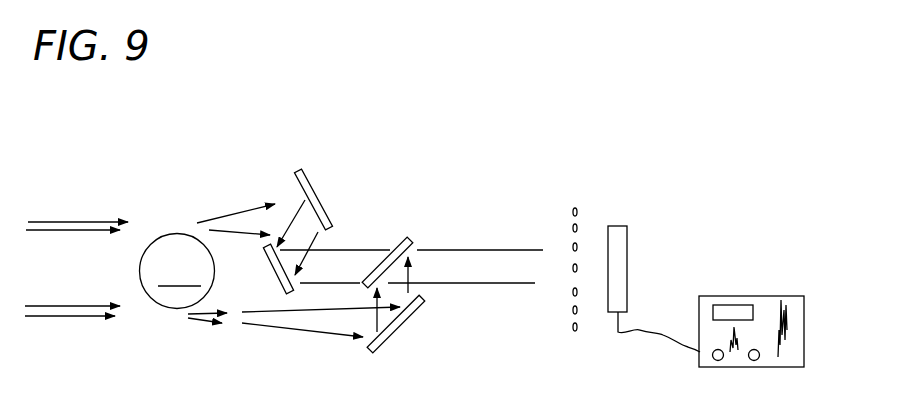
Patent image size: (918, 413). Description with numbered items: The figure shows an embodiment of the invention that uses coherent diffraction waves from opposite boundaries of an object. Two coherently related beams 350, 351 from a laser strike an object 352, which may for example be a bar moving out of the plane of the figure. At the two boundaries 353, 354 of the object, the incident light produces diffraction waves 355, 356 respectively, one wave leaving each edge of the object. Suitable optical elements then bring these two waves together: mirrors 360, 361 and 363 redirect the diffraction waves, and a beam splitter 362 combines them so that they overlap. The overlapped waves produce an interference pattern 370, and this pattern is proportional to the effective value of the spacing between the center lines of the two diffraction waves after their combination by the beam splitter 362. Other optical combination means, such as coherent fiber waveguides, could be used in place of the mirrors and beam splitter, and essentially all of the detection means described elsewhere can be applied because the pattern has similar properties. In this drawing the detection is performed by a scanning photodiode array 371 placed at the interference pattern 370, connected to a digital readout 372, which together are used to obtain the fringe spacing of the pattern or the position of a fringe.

The coherently related beam 350 is at (67, 316).
The coherently related beam 351 is at (50, 222).
The object 352 is at (177, 271).
The boundary 353 is at (180, 233).
The boundary 354 is at (180, 310).
The diffraction wave 355 is at (227, 215).
The diffraction wave 356 is at (200, 320).
The mirror 360 is at (322, 190).
The mirror 361 is at (278, 277).
The beam splitter 362 is at (403, 238).
The mirror 363 is at (398, 330).
The interference pattern 370 is at (602, 178).
The scanning photodiode array 371 is at (618, 224).
The digital readout 372 is at (748, 296).